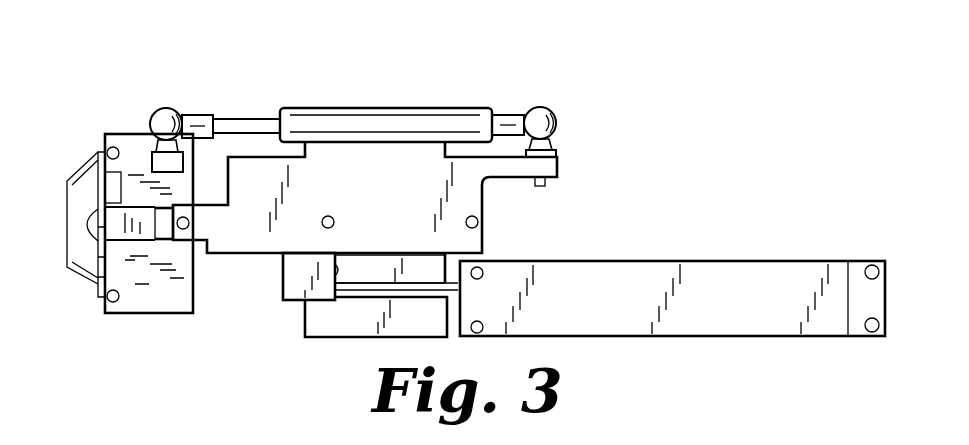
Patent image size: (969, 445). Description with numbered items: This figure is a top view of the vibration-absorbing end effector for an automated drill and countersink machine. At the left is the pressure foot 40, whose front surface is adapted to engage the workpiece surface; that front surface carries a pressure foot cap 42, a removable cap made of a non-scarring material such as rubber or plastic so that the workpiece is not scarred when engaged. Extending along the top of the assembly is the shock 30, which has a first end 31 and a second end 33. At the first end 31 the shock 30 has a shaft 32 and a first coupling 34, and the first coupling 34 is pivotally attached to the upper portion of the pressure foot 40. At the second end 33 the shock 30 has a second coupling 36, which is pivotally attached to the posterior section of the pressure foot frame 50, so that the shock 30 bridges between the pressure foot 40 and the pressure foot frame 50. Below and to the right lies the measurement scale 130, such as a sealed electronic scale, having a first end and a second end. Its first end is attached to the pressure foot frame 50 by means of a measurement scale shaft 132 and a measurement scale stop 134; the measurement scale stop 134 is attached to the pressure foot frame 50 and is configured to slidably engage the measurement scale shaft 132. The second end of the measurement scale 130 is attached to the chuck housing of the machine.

The shock 30 is at (386, 108).
The first end 31 is at (185, 92).
The shaft 32 is at (240, 118).
The second end 33 is at (561, 96).
The first coupling 34 is at (162, 109).
The second coupling 36 is at (536, 108).
The pressure foot 40 is at (151, 314).
The pressure foot cap 42 is at (84, 176).
The pressure foot frame 50 is at (484, 203).
The measurement scale 130 is at (625, 260).
The measurement scale shaft 132 is at (305, 321).
The measurement scale stop 134 is at (283, 277).